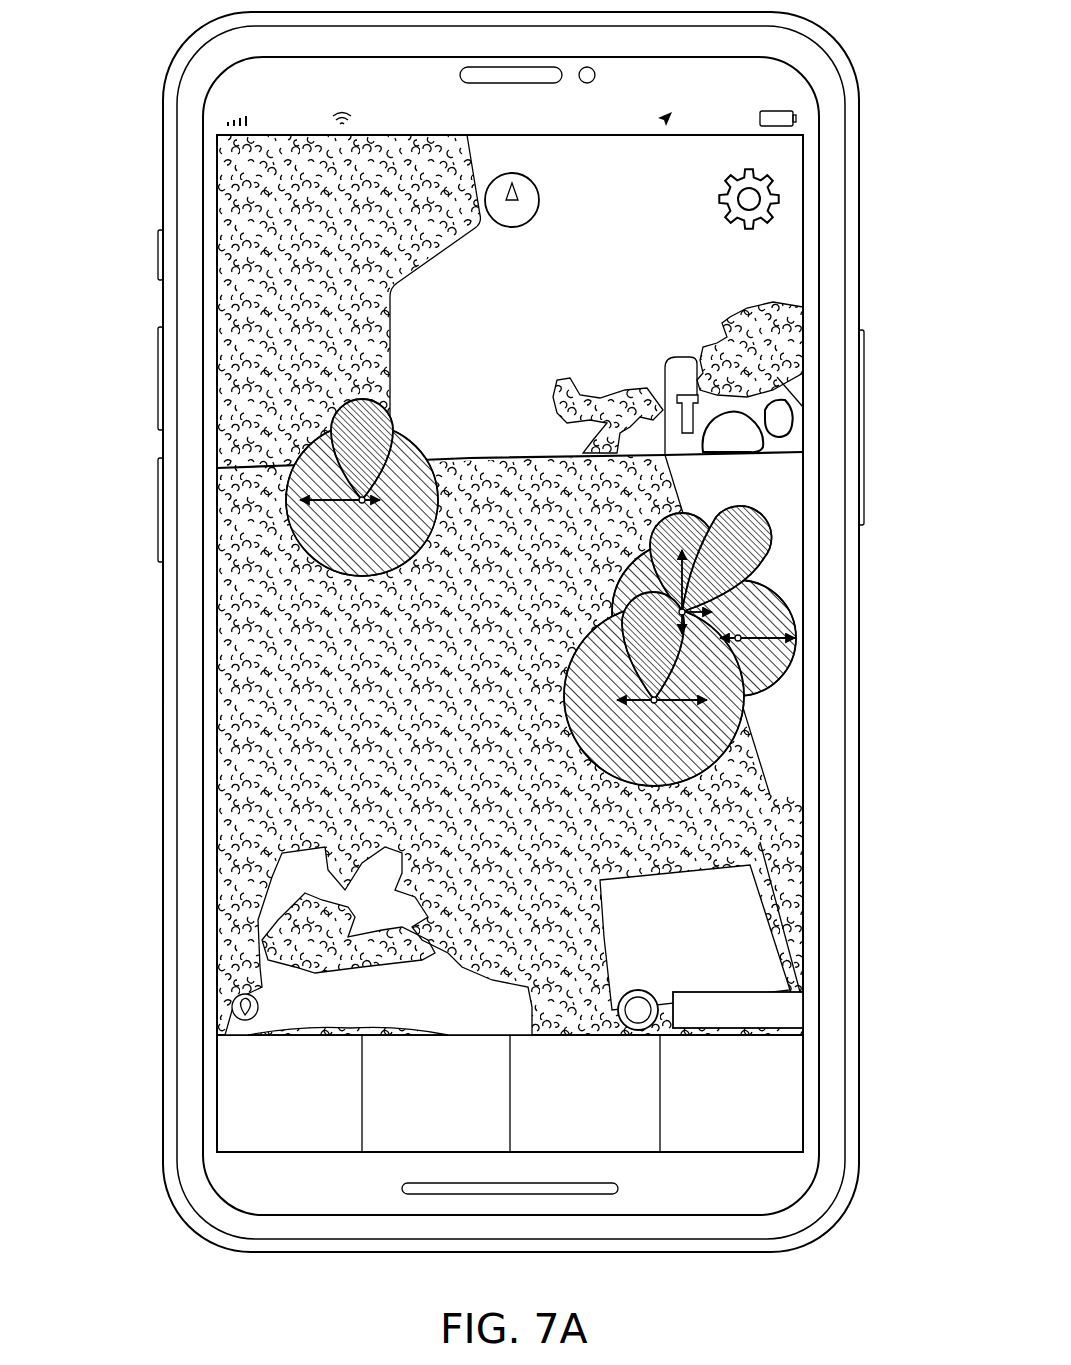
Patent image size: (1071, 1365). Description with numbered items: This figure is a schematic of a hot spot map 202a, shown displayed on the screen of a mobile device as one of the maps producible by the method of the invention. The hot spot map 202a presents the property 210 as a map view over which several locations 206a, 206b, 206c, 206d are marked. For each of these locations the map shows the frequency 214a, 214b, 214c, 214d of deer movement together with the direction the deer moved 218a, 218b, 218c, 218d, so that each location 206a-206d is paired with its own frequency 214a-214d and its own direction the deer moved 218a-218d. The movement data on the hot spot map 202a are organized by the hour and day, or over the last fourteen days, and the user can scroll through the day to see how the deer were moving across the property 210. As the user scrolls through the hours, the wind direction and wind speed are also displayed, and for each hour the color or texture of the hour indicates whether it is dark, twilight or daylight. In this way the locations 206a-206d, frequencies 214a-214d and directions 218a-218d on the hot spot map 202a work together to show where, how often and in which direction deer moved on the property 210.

The hot spot map 202a is at (146, 46).
The property 210 is at (722, 830).
The location 206a is at (332, 438).
The location 206b is at (763, 553).
The location 206c is at (745, 594).
The location 206d is at (650, 702).
The frequency 214a is at (287, 482).
The frequency 214b is at (716, 560).
The frequency 214c is at (806, 652).
The frequency 214d is at (720, 721).
The direction the deer moved 218a is at (308, 554).
The direction the deer moved 218b is at (748, 578).
The direction the deer moved 218c is at (778, 685).
The direction the deer moved 218d is at (735, 755).